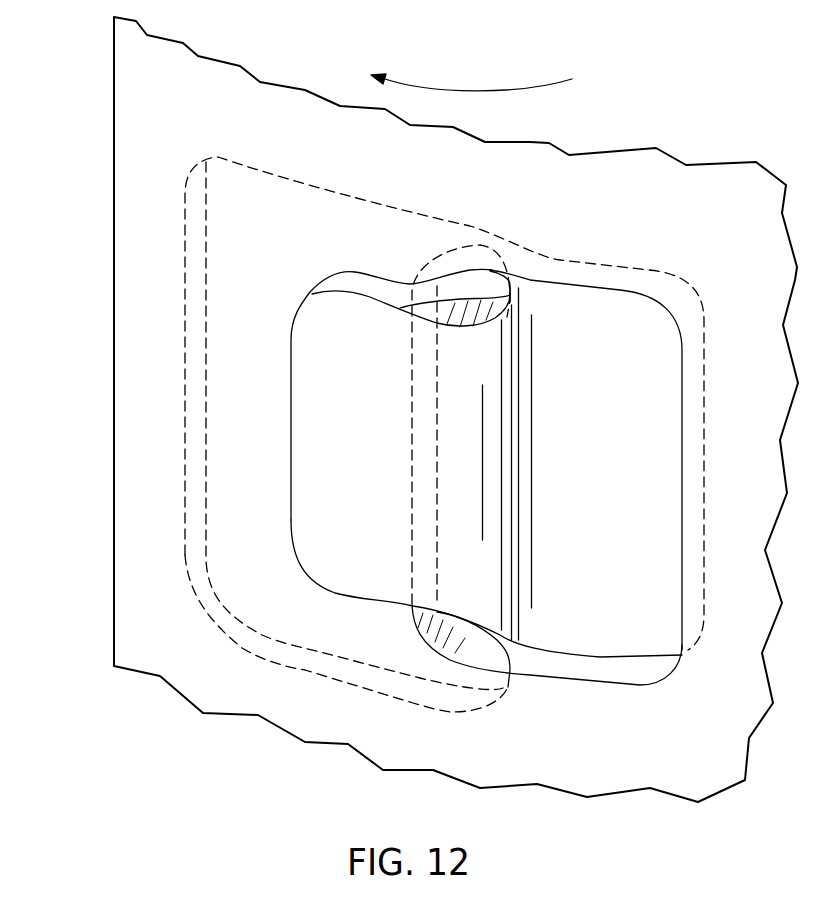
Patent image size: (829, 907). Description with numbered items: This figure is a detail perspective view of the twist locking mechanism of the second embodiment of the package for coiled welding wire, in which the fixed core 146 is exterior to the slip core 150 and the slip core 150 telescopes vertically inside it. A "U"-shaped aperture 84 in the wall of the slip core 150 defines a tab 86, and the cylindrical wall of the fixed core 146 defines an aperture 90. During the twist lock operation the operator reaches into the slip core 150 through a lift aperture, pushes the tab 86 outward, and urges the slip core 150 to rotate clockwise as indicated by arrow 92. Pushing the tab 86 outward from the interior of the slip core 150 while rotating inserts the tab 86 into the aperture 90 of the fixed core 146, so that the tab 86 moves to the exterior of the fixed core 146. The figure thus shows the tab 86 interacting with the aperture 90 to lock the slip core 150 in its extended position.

The fixed core 146 is at (130, 103).
The "U"-shaped aperture 84 is at (227, 285).
The tab 86 is at (291, 392).
The aperture 90 is at (460, 284).
The arrow 92 is at (490, 90).
The slip core 150 is at (628, 484).